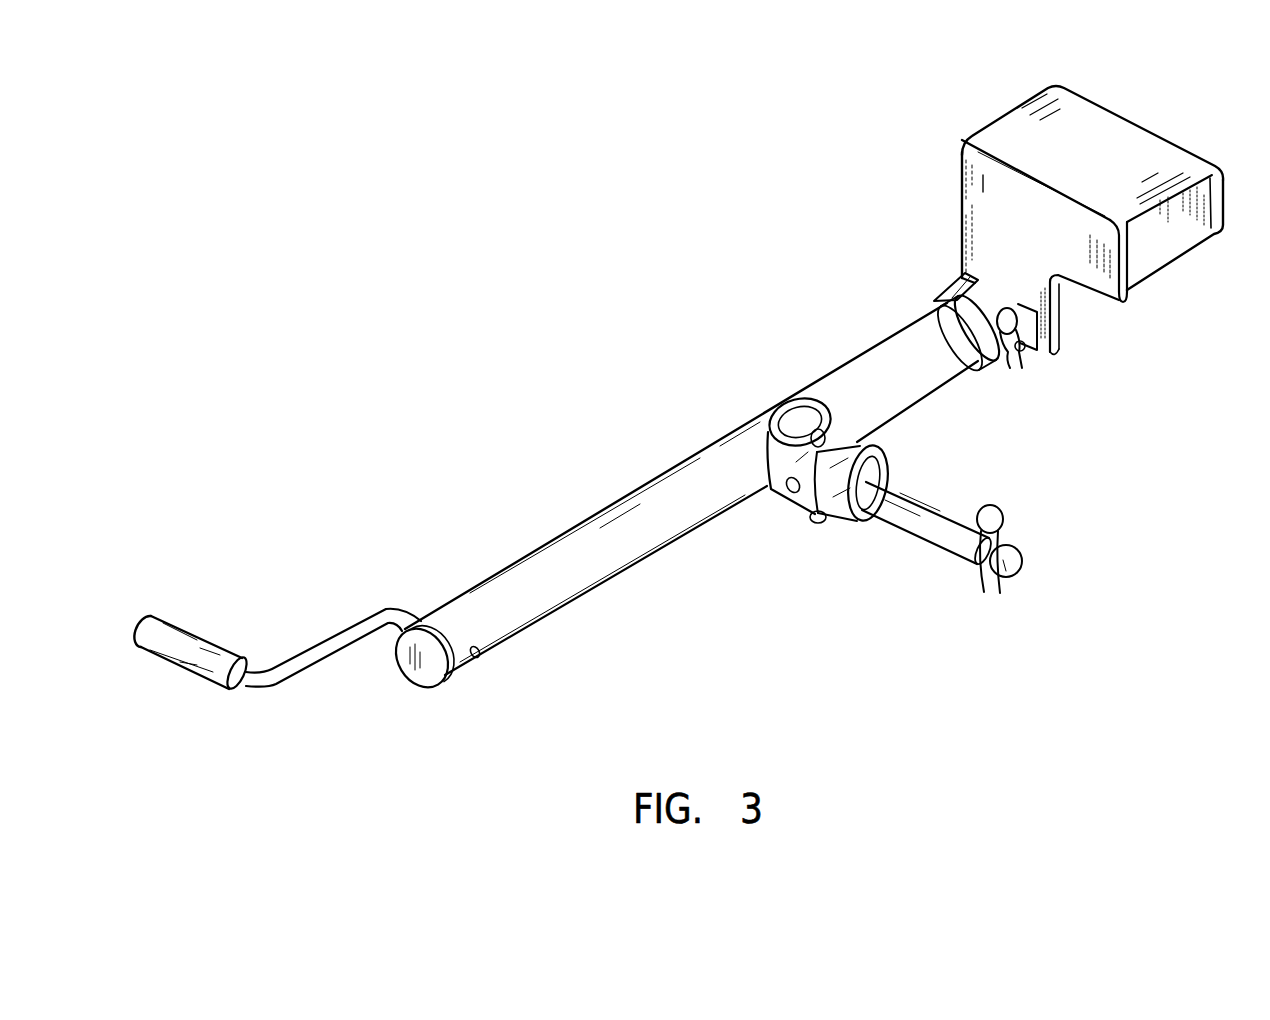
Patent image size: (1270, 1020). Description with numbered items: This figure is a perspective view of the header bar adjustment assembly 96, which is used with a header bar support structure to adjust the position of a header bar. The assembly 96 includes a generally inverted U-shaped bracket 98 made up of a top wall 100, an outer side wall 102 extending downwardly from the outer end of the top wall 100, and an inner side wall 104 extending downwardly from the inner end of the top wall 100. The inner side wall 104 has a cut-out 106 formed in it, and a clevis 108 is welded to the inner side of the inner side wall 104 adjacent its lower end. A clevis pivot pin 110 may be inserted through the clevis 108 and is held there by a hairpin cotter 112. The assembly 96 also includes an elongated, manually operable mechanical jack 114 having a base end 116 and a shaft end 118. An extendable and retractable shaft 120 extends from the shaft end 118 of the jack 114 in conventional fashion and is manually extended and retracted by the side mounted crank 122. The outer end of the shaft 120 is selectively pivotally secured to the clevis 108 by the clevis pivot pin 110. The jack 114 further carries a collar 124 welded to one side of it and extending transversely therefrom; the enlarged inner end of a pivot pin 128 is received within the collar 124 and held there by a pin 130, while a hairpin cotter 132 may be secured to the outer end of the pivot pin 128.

The header bar adjustment assembly 96 is at (644, 416).
The inverted U-shaped bracket 98 is at (1140, 110).
The top wall 100 is at (1136, 170).
The outer side wall 102 is at (1197, 212).
The inner side wall 104 is at (1000, 220).
The cut-out 106 is at (1070, 303).
The clevis 108 is at (930, 284).
The clevis pivot pin 110 is at (1028, 352).
The hairpin cotter 112 is at (1020, 325).
The jack 114 is at (576, 514).
The base end 116 is at (427, 673).
The shaft end 118 is at (975, 340).
The extendable and retractable shaft 120 is at (987, 277).
The side mounted crank 122 is at (348, 620).
The collar 124 is at (870, 467).
The pivot pin 128 is at (935, 532).
The pin 130 is at (806, 398).
The hairpin cotter 132 is at (1007, 523).